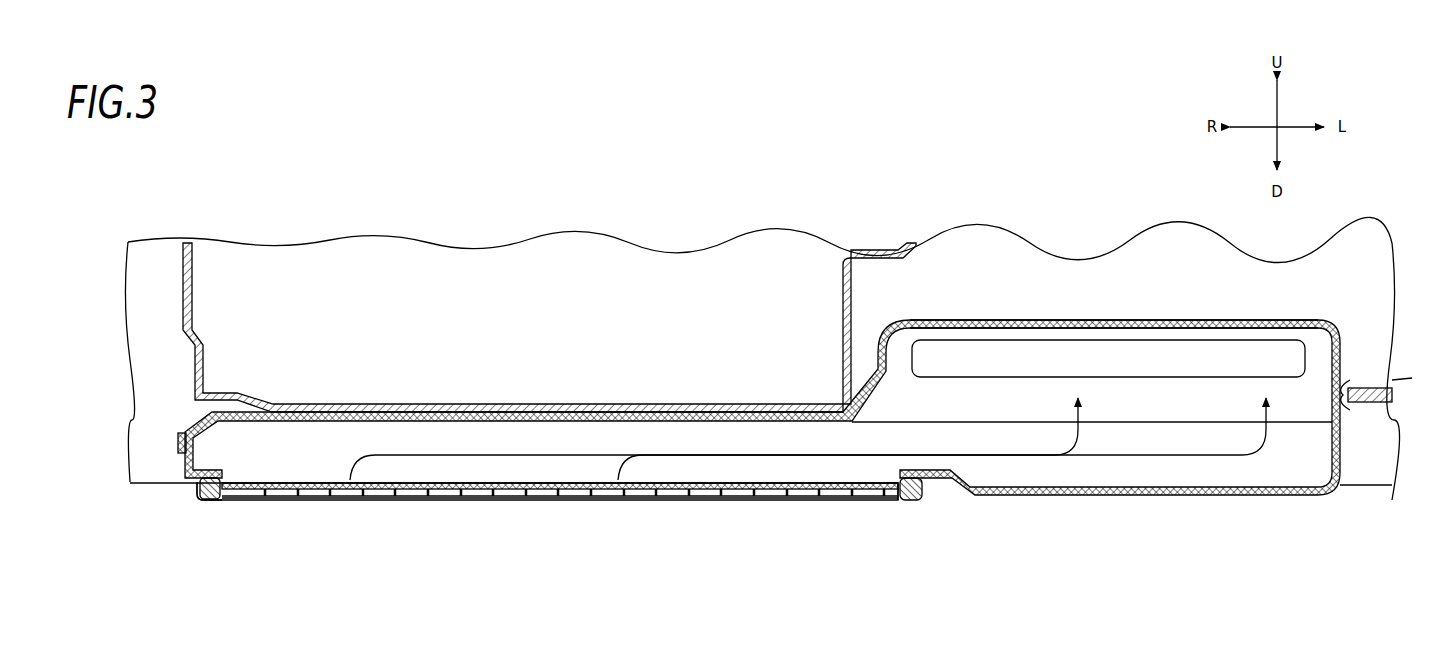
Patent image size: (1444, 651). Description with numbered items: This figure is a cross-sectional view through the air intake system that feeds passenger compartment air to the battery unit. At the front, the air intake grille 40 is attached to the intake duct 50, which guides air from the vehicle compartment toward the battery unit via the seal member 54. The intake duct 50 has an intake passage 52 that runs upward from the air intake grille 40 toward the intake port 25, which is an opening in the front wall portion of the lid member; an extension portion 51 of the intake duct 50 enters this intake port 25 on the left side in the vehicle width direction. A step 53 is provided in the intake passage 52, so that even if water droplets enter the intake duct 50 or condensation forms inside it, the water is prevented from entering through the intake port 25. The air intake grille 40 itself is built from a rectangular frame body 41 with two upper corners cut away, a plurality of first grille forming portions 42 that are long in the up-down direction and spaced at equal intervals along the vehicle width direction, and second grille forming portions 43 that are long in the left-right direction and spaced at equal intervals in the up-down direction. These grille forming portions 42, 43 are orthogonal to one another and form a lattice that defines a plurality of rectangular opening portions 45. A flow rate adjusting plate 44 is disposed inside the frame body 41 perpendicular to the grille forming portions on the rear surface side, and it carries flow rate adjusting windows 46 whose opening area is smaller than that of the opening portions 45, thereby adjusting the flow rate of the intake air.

The intake port 25 is at (1392, 380).
The air intake grille 40 is at (554, 459).
The frame body 41 is at (208, 501).
The first grille forming portion 42 is at (603, 491).
The second grille forming portion 43 is at (770, 499).
The flow rate adjusting plate 44 is at (838, 482).
The opening portion 45 is at (345, 500).
The flow rate adjusting window 46 is at (490, 484).
The intake duct 50 is at (1062, 498).
The extension portion 51 is at (1128, 318).
The intake passage 52 is at (583, 440).
The step 53 is at (1170, 423).
The seal member 54 is at (203, 482).